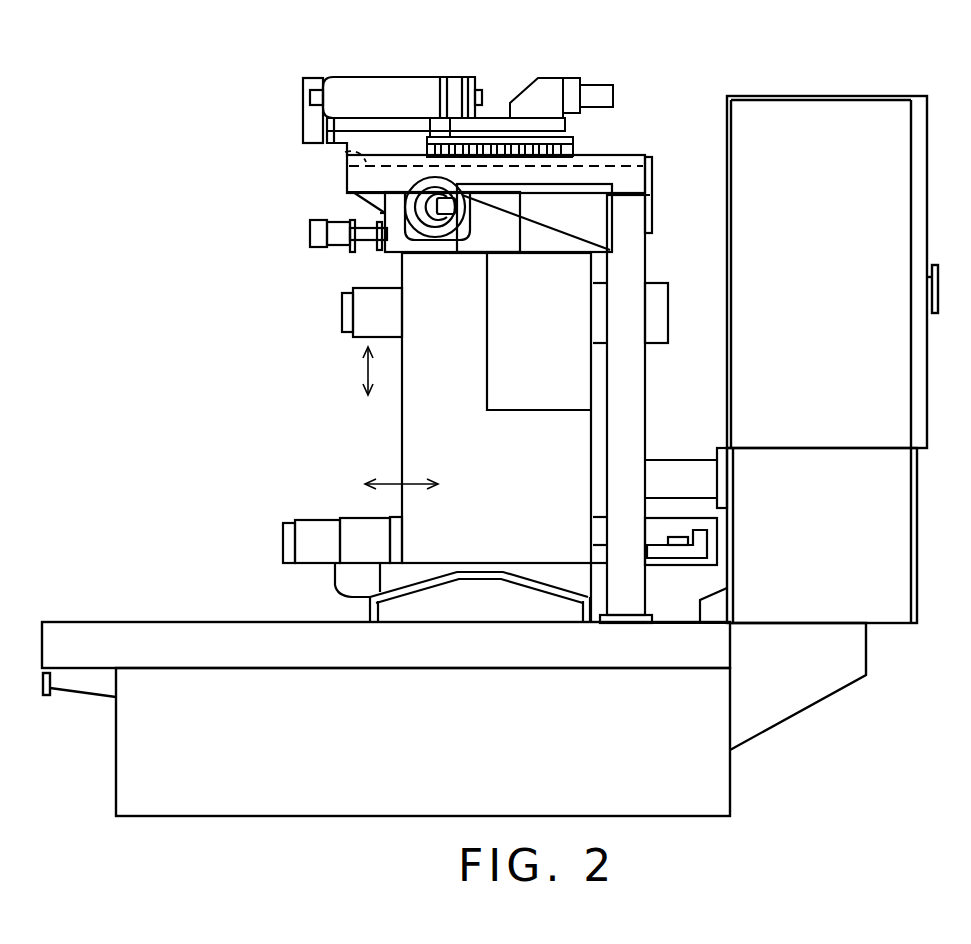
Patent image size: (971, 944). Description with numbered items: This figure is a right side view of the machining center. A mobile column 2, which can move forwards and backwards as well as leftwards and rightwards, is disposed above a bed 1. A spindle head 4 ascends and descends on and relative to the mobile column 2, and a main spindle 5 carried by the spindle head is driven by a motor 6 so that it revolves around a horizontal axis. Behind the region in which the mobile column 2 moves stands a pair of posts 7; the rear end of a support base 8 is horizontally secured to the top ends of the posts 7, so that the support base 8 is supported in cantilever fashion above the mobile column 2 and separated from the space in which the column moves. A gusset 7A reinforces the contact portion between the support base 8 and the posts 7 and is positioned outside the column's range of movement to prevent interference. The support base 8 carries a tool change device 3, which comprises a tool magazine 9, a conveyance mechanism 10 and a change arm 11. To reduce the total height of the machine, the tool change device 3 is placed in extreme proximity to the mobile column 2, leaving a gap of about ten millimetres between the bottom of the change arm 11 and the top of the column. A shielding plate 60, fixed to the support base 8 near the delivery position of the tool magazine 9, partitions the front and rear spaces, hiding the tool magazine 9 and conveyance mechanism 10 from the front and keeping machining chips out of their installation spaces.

The bed 1 is at (92, 636).
The mobile column 2 is at (421, 439).
The tool change device 3 is at (278, 123).
The spindle head 4 is at (363, 328).
The main spindle 5 is at (340, 310).
The motor 6 is at (660, 344).
The post 7 is at (646, 259).
The gusset 7A is at (590, 195).
The support base 8 is at (348, 152).
The tool magazine 9 is at (573, 133).
The conveyance mechanism 10 is at (342, 78).
The change arm 11 is at (310, 235).
The shielding plate 60 is at (297, 137).